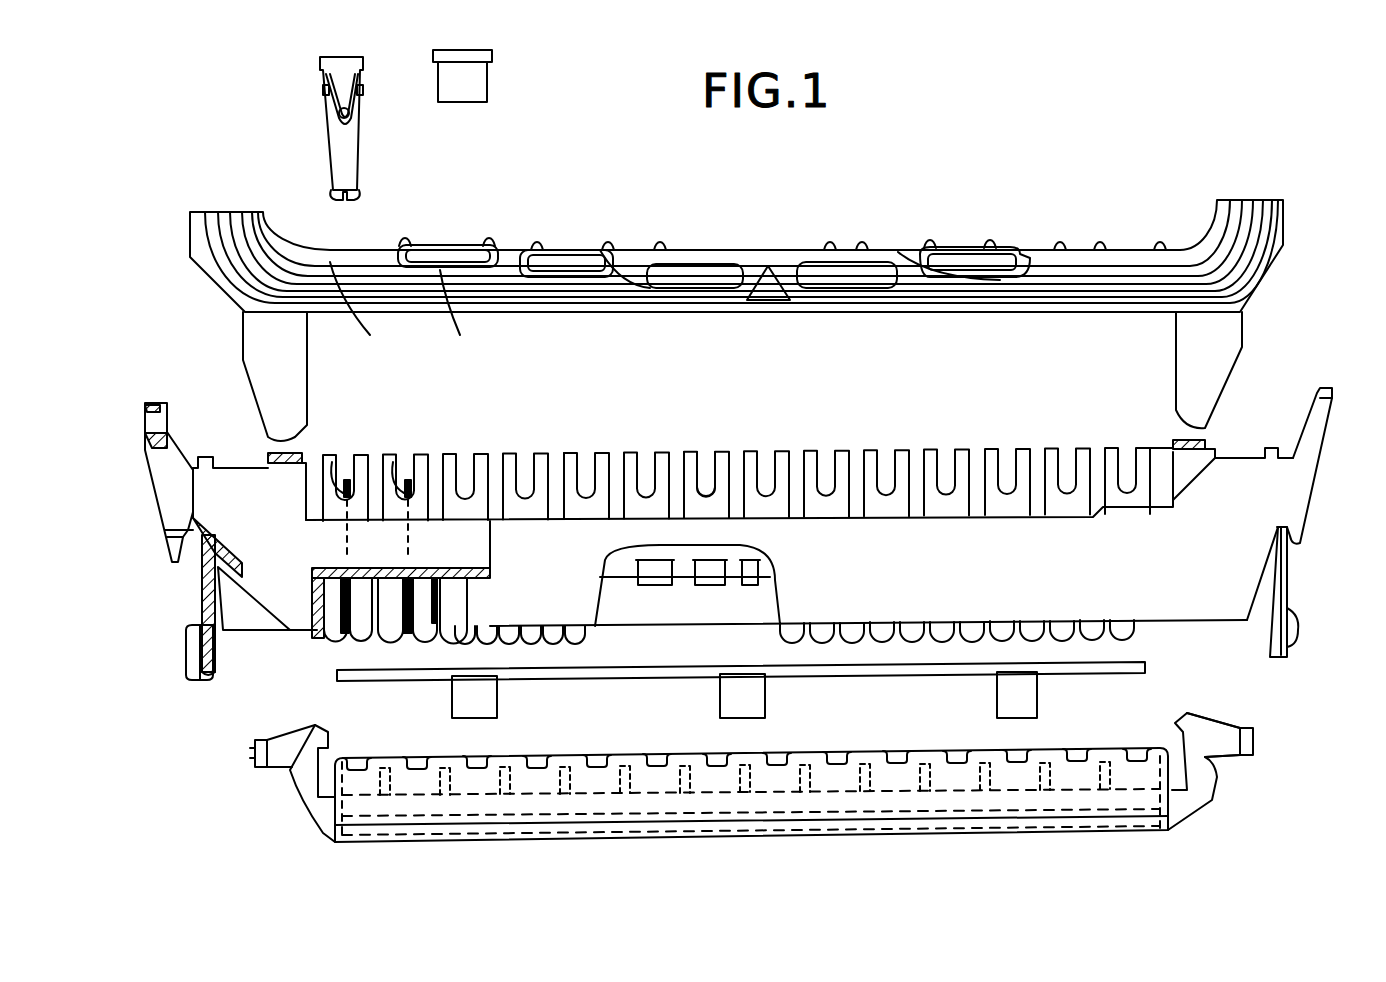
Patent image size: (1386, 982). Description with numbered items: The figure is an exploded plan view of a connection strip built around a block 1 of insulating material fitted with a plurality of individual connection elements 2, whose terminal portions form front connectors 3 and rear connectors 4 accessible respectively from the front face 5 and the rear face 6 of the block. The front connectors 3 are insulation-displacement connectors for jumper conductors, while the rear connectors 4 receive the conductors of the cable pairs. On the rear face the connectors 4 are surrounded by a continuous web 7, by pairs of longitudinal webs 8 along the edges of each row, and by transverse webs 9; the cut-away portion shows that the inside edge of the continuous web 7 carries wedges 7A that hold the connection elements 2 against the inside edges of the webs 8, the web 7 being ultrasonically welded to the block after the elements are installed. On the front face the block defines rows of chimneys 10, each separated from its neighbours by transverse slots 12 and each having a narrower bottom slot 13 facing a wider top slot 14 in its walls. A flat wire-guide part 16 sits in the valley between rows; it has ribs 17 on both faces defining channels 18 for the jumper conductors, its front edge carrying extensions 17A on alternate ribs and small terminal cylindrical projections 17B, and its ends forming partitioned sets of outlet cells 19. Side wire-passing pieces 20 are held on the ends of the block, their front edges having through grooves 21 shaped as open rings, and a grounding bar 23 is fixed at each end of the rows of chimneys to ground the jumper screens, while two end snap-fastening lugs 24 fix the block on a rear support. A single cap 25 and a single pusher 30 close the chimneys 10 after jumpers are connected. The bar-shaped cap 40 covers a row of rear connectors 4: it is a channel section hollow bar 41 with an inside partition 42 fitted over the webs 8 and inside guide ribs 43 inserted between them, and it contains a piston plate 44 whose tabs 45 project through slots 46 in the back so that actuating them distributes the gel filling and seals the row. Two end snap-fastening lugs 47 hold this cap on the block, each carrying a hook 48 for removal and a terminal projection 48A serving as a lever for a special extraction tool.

The block 1 is at (420, 452).
The connection elements 2 is at (345, 508).
The front connectors 3 is at (404, 465).
The rear connectors 4 is at (400, 625).
The front face 5 is at (1237, 455).
The rear face 6 is at (1210, 622).
The continuous web 7 is at (345, 648).
The wedges 7A is at (760, 598).
The longitudinal webs 8 is at (390, 640).
The transverse webs 9 is at (420, 575).
The chimneys 10 is at (480, 450).
The transverse slots 12 is at (620, 455).
The bottom slot 13 is at (708, 470).
The top slot 14 is at (708, 475).
The wire-guide part 16 is at (512, 246).
The ribs 17 is at (465, 311).
The extensions 17A is at (680, 252).
The terminal cylindrical projections 17B is at (620, 252).
The channels 18 is at (366, 307).
The sets of outlet cells 19 is at (215, 212).
The wire-passing pieces 20 is at (152, 410).
The through grooves 21 is at (165, 420).
The grounding bar 23 is at (278, 452).
The snap-fastening lugs 24 is at (1292, 625).
The cap 25 is at (480, 97).
The pusher 30 is at (328, 152).
The cap 40 is at (290, 780).
The channel section hollow bar 41 is at (325, 838).
The inside partition 42 is at (405, 795).
The inside guide ribs 43 is at (618, 775).
The piston plate 44 is at (655, 678).
The tabs 45 is at (497, 715).
The slots 46 is at (455, 835).
The end snap-fastening lugs 47 is at (328, 752).
The hook 48 is at (283, 735).
The terminal projection 48A is at (252, 752).